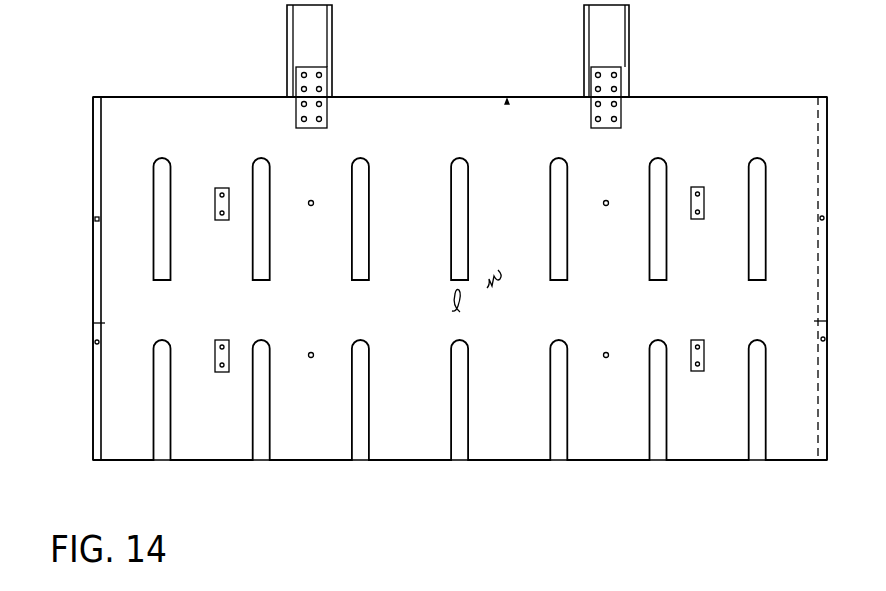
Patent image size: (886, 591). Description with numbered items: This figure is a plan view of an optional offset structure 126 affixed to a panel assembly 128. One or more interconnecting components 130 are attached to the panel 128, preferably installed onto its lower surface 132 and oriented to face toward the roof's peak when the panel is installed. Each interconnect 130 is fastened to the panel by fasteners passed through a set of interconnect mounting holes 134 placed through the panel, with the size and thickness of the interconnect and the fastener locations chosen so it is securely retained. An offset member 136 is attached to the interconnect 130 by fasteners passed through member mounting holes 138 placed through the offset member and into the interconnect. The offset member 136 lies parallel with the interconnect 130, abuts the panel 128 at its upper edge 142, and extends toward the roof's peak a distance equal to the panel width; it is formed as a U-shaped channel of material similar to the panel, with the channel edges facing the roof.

The offset structure 126 is at (688, 37).
The panel assembly 128 is at (90, 379).
The interconnecting component 130 is at (302, 118).
The lower surface 132 is at (728, 300).
The interconnect mounting holes 134 is at (319, 119).
The offset member 136 is at (320, 24).
The member mounting holes 138 is at (319, 75).
The upper edge 142 is at (443, 97).